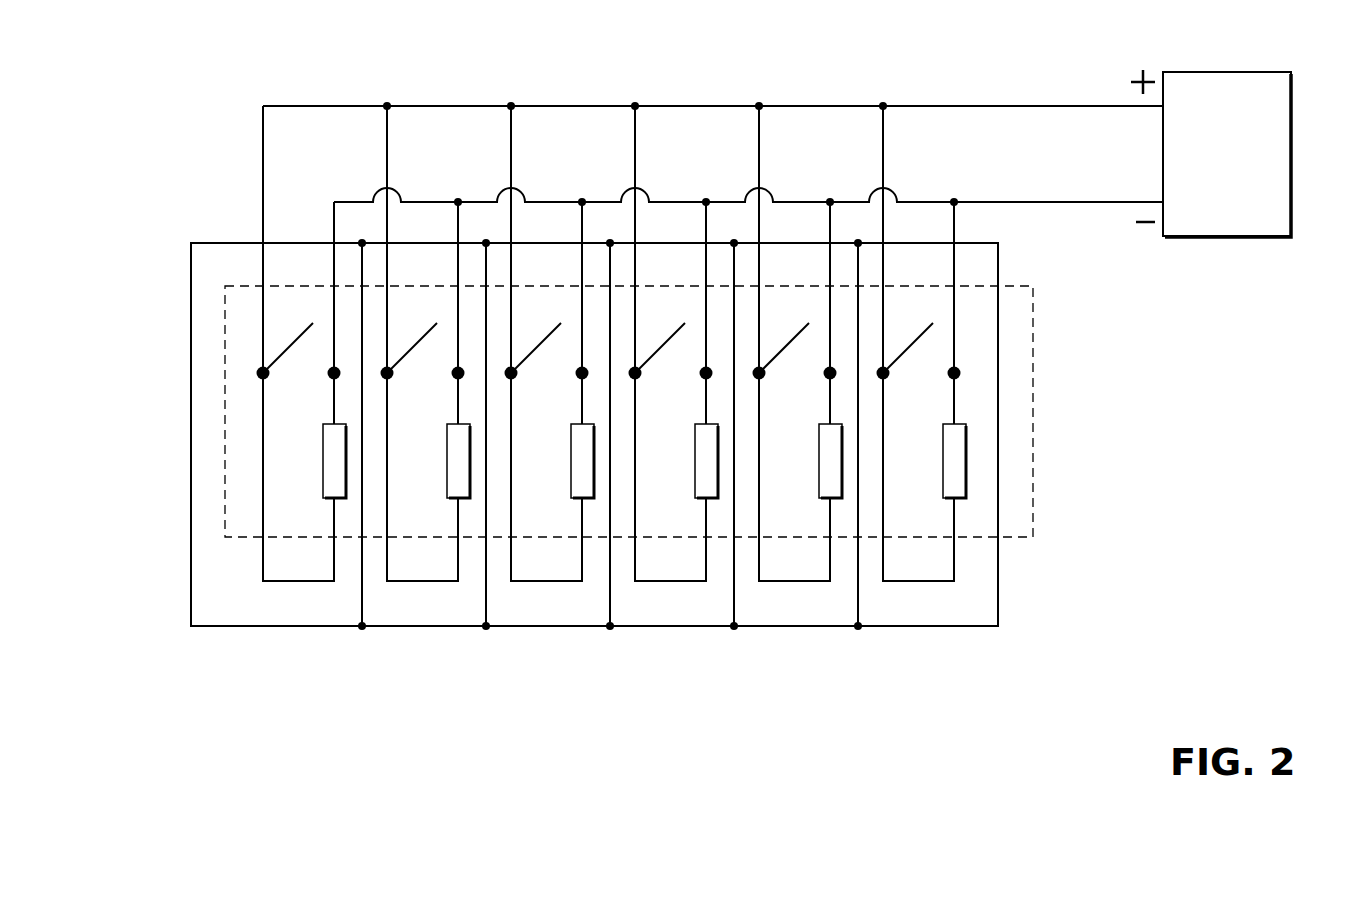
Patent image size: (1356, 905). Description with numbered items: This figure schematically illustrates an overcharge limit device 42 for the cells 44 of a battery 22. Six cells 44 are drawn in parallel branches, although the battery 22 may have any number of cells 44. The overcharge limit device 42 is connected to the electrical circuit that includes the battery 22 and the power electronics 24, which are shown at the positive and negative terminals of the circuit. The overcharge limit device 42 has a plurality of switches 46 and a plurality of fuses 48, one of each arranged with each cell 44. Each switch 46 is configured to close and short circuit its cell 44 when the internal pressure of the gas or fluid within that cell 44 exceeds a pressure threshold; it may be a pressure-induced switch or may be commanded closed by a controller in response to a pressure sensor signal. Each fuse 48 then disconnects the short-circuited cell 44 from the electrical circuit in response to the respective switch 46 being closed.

The battery 22 is at (150, 441).
The power electronics 24 is at (1292, 152).
The overcharge limit device 42 is at (1034, 407).
The cell 44 is at (293, 617).
The switch 46 is at (287, 348).
The fuse 48 is at (322, 485).